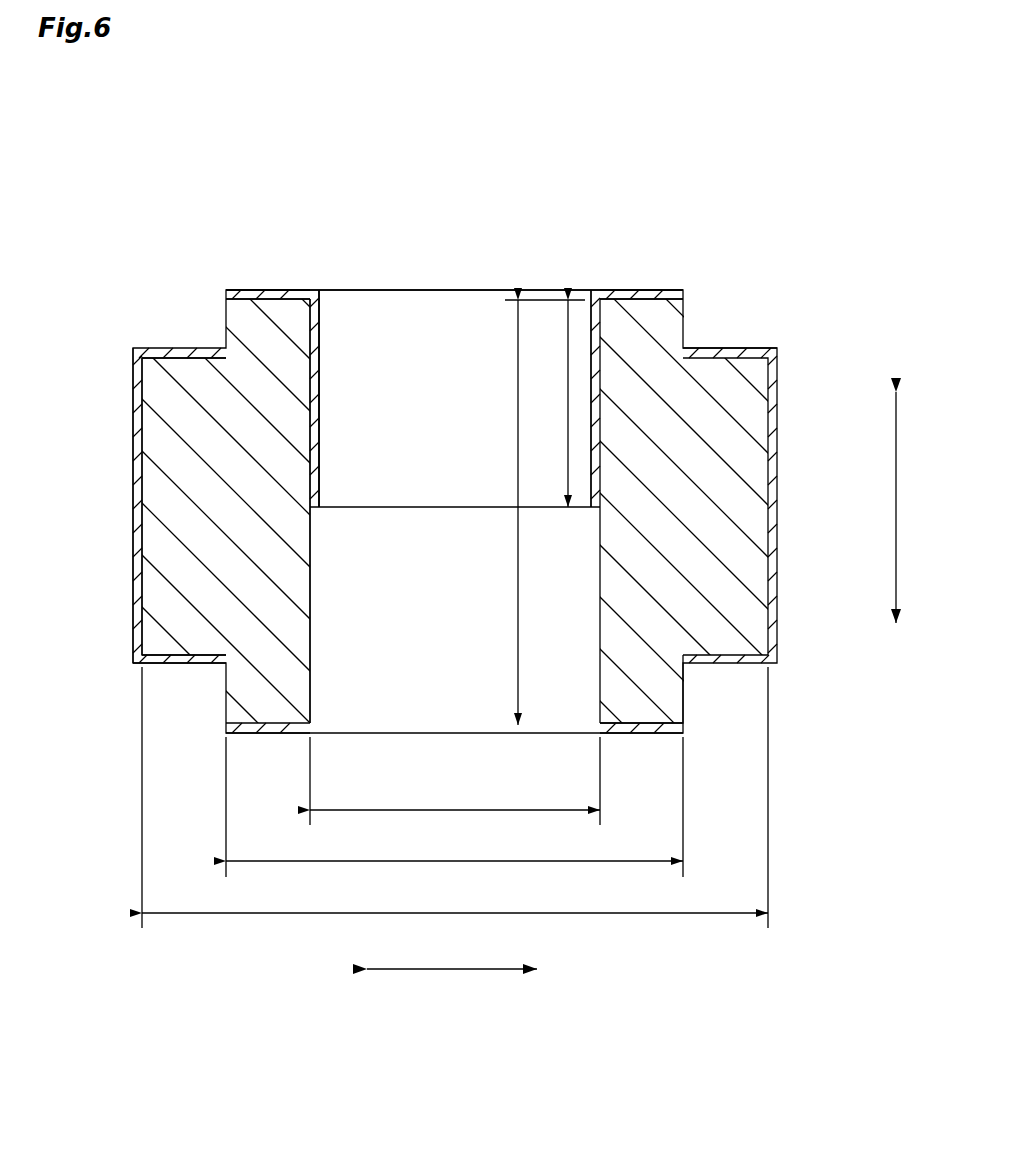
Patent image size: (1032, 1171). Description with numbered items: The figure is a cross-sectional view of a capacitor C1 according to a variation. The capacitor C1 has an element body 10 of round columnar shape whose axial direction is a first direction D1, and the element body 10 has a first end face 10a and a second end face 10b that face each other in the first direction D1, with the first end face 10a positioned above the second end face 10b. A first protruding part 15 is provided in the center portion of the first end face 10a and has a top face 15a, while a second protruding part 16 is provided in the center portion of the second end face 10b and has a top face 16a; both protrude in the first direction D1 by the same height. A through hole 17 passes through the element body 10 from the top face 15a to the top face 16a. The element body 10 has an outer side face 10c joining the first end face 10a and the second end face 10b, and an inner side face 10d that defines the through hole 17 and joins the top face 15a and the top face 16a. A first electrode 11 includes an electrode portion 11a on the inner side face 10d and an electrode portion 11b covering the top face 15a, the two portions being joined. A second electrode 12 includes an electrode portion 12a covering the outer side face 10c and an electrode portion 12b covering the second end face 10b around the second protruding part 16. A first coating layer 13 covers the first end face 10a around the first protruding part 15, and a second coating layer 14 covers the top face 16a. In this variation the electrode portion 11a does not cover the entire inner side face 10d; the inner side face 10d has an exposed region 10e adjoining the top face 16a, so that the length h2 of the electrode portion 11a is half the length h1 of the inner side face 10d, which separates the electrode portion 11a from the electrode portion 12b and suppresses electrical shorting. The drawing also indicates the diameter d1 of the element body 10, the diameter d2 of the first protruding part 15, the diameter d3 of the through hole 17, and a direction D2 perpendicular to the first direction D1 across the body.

The element body 10 is at (742, 447).
The first end face 10a is at (181, 348).
The second end face 10b is at (160, 665).
The outer side face 10c is at (141, 528).
The inner side face 10d is at (316, 423).
The exposed region 10e is at (311, 605).
The first electrode 11 is at (637, 290).
The electrode portion 11a is at (332, 315).
The electrode portion 11b is at (282, 290).
The second electrode 12 is at (777, 563).
The electrode portion 12a is at (133, 452).
The electrode portion 12b is at (190, 665).
The first coating layer 13 is at (748, 348).
The second coating layer 14 is at (633, 735).
The first protruding part 15 is at (655, 332).
The top face 15a is at (252, 290).
The second protruding part 16 is at (648, 681).
The top face 16a is at (278, 735).
The through hole 17 is at (466, 341).
The capacitor C1 is at (743, 183).
The length of the inner side face h1 is at (536, 512).
The length of the electrode portion h2 is at (549, 403).
The first direction D1 is at (919, 507).
The dimension D2 is at (452, 989).
The diameter of the element body d1 is at (455, 806).
The diameter of the first protruding part d2 is at (454, 816).
The diameter of the through hole d3 is at (455, 790).